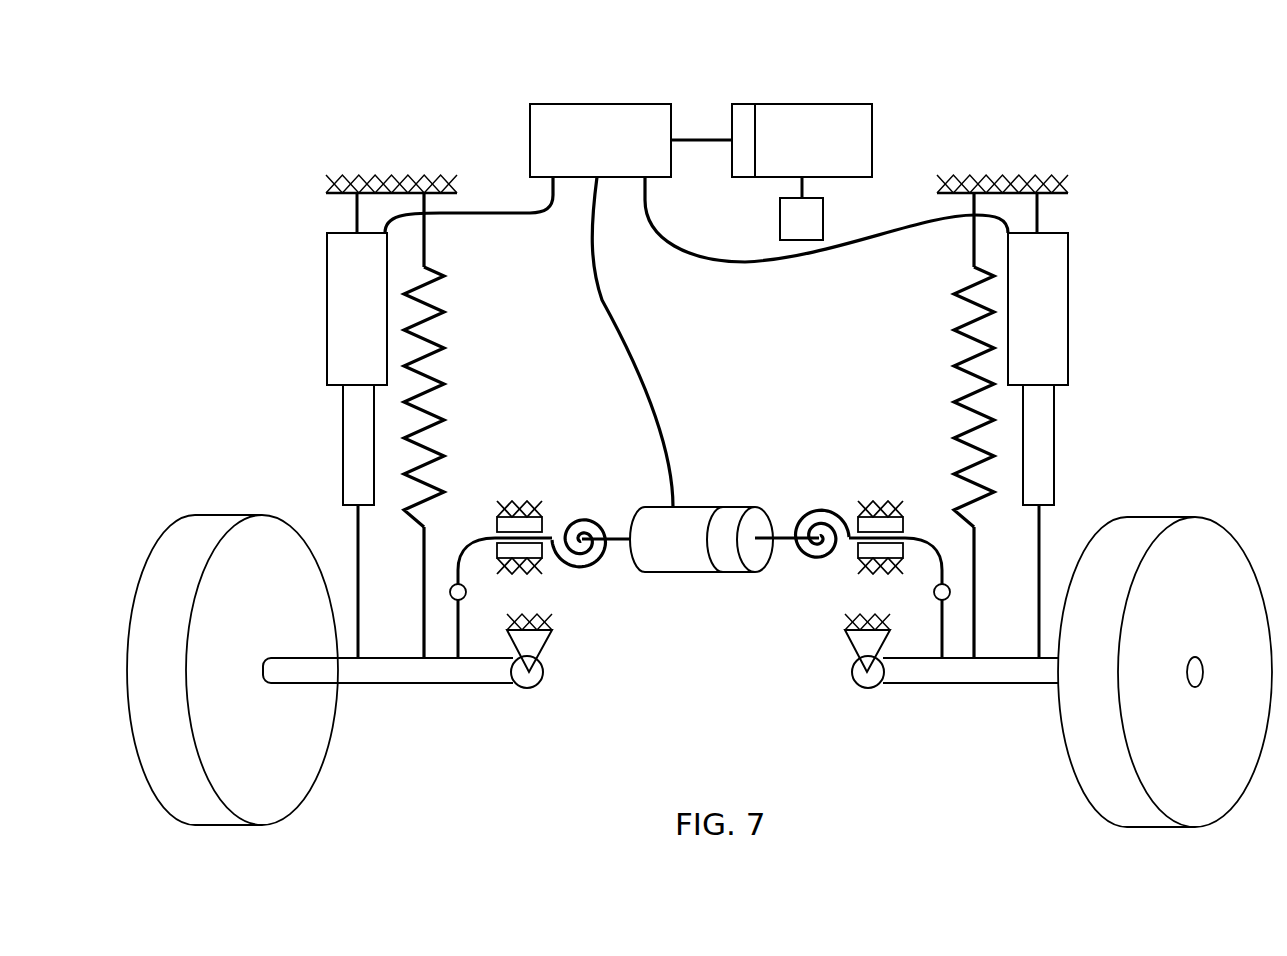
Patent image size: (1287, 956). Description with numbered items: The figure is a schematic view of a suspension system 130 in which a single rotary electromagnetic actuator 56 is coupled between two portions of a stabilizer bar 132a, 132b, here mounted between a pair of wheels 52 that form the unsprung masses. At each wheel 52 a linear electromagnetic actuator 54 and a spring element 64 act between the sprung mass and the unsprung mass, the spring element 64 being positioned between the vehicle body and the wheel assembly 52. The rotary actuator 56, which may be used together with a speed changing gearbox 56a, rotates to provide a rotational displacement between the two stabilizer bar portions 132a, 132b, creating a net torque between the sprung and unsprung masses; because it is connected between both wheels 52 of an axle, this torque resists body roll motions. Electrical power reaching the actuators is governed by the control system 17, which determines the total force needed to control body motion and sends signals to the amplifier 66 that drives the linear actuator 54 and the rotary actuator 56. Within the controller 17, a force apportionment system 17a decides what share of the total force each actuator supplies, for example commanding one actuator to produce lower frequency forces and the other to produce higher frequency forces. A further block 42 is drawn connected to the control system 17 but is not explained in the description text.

The suspension system 130 is at (1113, 130).
The amplifier 66 is at (590, 104).
The control system 17 is at (815, 104).
The force apportionment system 17a is at (742, 104).
The controller 42 is at (823, 220).
The linear electromagnetic actuator 54 is at (327, 331).
The spring element 64 is at (430, 332).
The wheel assembly 52 is at (225, 515).
The stabilizer bar portion 132a is at (463, 542).
The stabilizer bar portion 132b is at (824, 506).
The rotary electromagnetic actuator 56 is at (687, 507).
The speed changing gearbox 56a is at (742, 507).